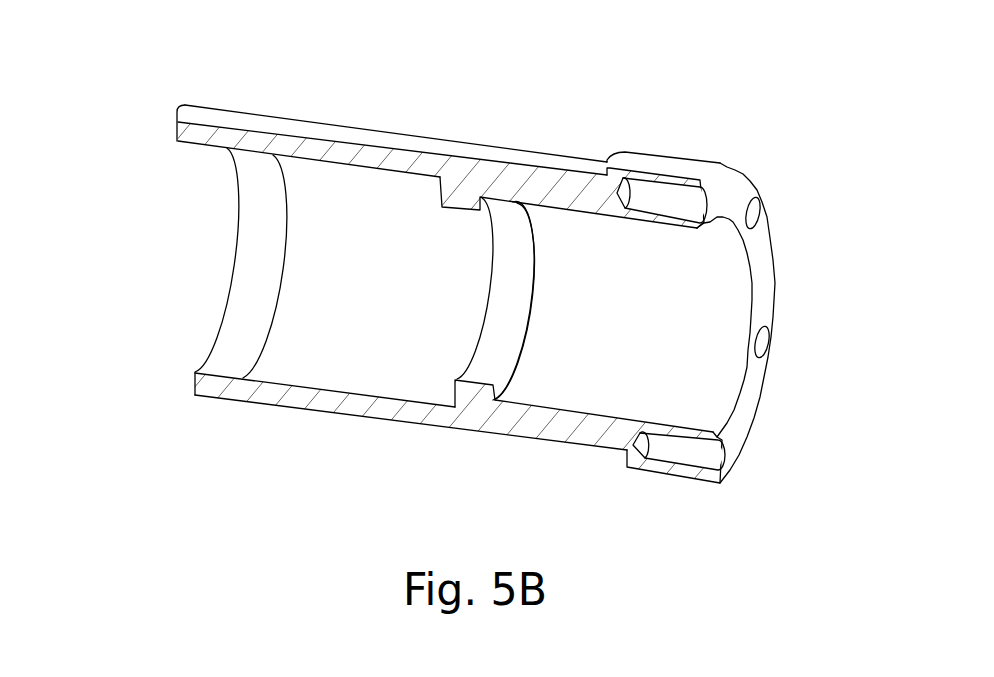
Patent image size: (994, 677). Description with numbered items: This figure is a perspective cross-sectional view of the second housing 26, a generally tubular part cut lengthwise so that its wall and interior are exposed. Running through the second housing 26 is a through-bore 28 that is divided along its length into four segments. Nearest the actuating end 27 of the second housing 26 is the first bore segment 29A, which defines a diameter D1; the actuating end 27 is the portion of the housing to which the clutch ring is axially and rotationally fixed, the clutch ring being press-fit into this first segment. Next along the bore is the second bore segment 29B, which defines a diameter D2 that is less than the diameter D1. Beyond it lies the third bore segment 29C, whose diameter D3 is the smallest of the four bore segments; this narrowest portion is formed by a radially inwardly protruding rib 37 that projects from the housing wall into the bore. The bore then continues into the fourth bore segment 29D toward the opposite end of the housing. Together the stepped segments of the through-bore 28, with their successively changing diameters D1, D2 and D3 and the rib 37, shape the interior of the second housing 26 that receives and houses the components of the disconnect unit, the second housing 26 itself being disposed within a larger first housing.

The second housing 26 is at (570, 137).
The actuating end 27 is at (235, 118).
The through-bore 28 is at (364, 357).
The first bore segment 29A is at (225, 395).
The second bore segment 29B is at (357, 403).
The third bore segment 29C is at (478, 386).
The fourth bore segment 29D is at (530, 388).
The radially inwardly protruding rib 37 is at (460, 202).
The diameter D1 is at (192, 313).
The diameter D2 is at (373, 352).
The diameter D3 is at (452, 370).